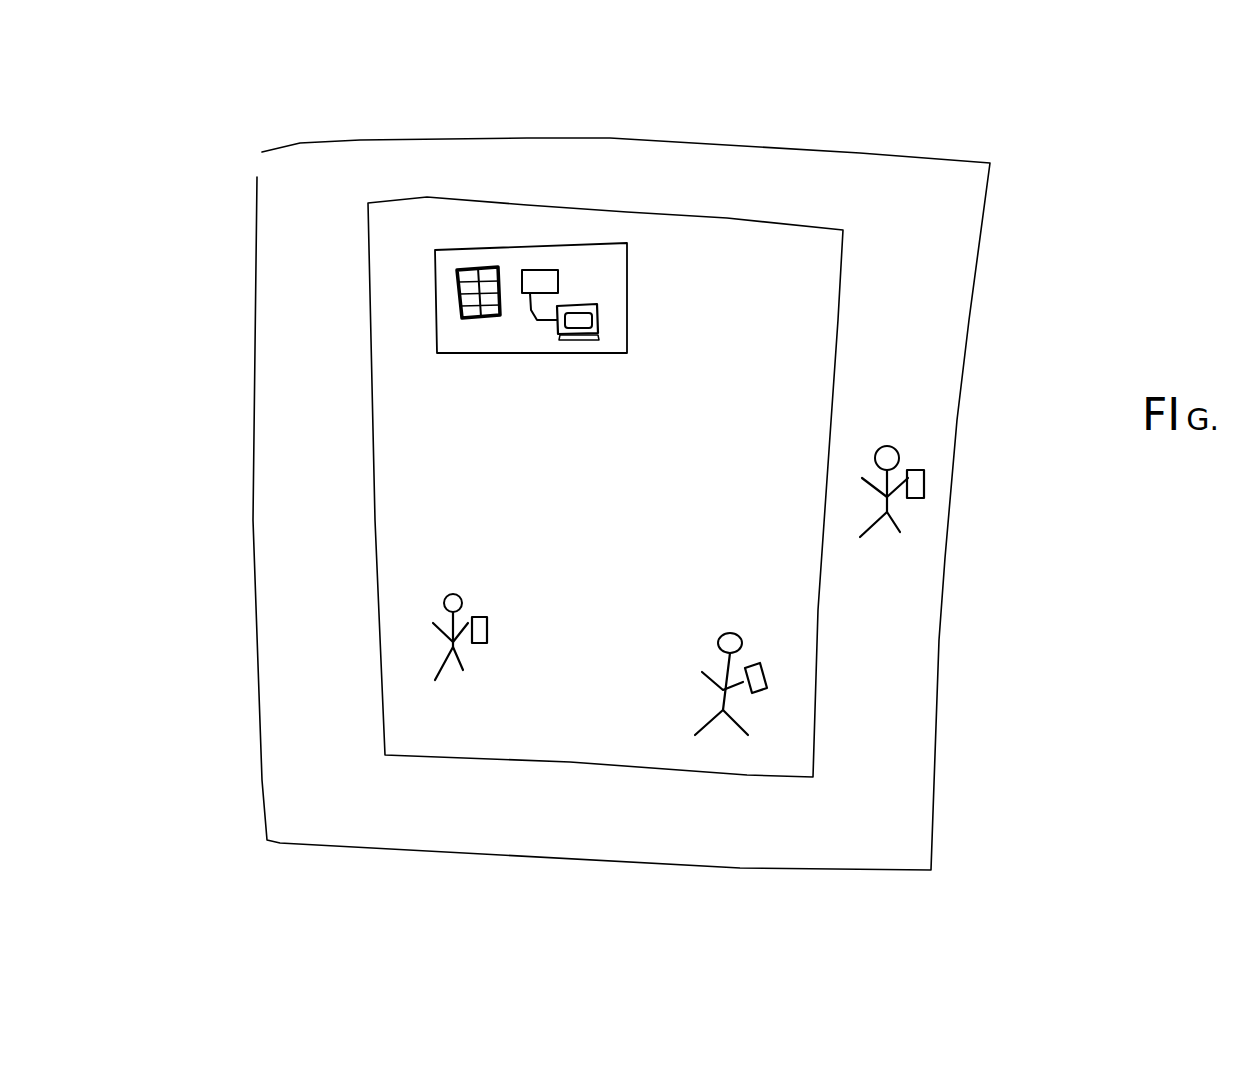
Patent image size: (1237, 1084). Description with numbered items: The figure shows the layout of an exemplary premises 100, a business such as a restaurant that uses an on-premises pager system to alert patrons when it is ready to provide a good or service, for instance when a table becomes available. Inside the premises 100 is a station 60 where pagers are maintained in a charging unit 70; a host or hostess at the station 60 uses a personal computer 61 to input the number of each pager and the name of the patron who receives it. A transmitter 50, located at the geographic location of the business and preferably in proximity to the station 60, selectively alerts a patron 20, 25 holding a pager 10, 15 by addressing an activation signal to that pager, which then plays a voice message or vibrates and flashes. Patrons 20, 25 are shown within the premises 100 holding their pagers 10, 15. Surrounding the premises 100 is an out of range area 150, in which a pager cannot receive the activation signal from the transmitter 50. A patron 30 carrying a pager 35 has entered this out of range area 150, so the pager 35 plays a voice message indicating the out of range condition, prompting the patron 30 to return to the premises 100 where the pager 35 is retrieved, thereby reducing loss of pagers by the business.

The on-premises pager 10 is at (488, 625).
The on-premises pager 15 is at (767, 700).
The patron 20 is at (448, 647).
The patron 25 is at (745, 657).
The patron 30 is at (900, 452).
The pager 35 is at (925, 486).
The transmitter 50 is at (548, 275).
The station 60 is at (477, 342).
The personal computer 61 is at (602, 317).
The charging unit 70 is at (463, 267).
The premises 100 is at (605, 487).
The out of range area 150 is at (621, 504).